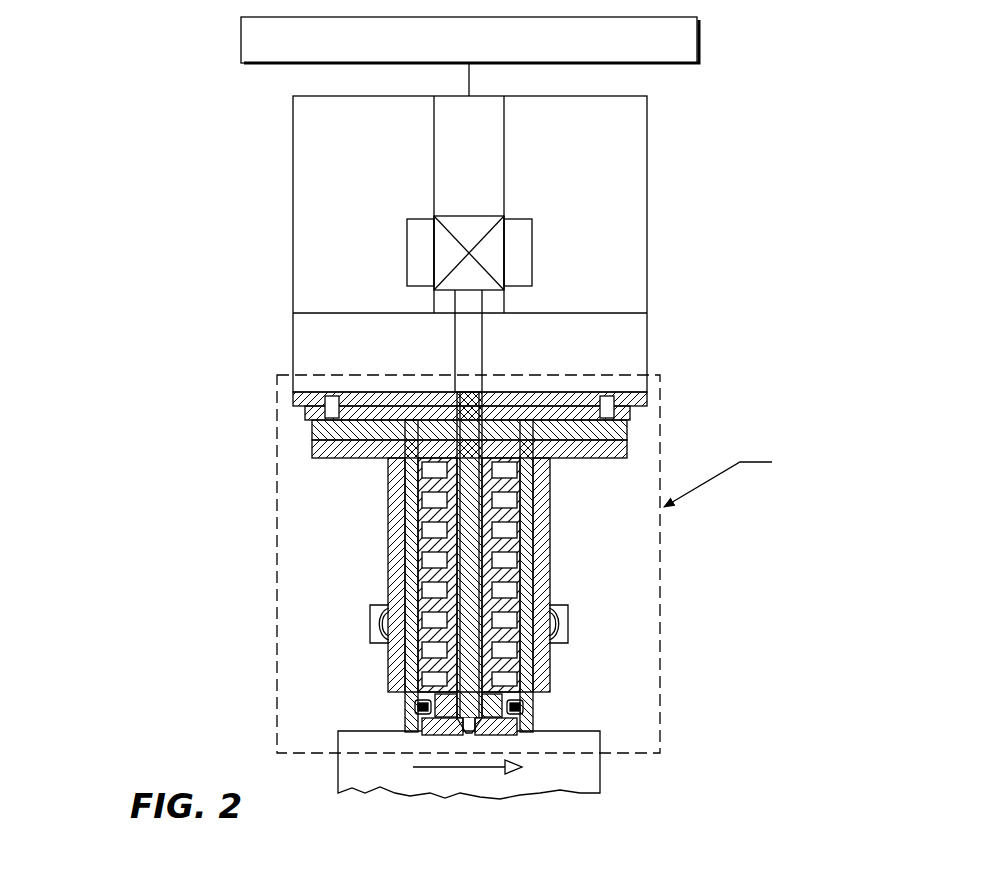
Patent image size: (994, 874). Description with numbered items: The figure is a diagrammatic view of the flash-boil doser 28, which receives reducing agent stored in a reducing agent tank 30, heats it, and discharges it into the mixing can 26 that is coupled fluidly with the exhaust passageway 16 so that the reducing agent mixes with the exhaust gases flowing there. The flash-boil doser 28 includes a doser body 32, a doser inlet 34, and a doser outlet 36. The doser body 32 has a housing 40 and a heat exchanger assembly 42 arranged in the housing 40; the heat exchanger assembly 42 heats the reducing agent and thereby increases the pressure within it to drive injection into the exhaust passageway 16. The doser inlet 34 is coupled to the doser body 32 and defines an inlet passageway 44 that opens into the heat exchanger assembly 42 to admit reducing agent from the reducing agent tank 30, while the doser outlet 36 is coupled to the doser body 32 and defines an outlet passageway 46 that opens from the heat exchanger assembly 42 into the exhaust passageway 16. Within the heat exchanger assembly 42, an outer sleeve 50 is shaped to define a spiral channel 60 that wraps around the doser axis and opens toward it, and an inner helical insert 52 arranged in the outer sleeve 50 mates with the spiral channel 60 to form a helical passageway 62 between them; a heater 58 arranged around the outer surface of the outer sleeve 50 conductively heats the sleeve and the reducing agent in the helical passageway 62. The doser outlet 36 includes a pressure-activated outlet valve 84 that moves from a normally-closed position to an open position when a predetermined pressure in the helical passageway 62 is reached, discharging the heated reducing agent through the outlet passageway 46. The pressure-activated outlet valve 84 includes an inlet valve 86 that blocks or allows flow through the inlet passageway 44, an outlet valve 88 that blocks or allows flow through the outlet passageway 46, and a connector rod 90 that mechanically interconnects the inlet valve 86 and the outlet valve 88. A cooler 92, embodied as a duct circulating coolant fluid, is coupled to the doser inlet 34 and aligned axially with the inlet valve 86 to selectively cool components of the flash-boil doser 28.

The exhaust passageway 16 is at (443, 770).
The mixing can 26 is at (548, 745).
The flash-boil doser 28 is at (140, 133).
The reducing agent tank 30 is at (241, 40).
The doser body 32 is at (255, 492).
The doser inlet 34 is at (267, 168).
The doser outlet 36 is at (383, 722).
The housing 40 is at (377, 502).
The heat exchanger assembly 42 is at (308, 617).
The inlet passageway 44 is at (453, 350).
The outlet passageway 46 is at (463, 737).
The outer sleeve 50 is at (393, 548).
The inner helical insert 52 is at (413, 653).
The heater 58 is at (393, 577).
The spiral channel 60 is at (483, 565).
The helical passageway 62 is at (513, 538).
The pressure-activated outlet valve 84 is at (700, 386).
The inlet valve 86 is at (470, 216).
The outlet valve 88 is at (600, 731).
The connector rod 90 is at (548, 603).
The cooler 92 is at (504, 254).